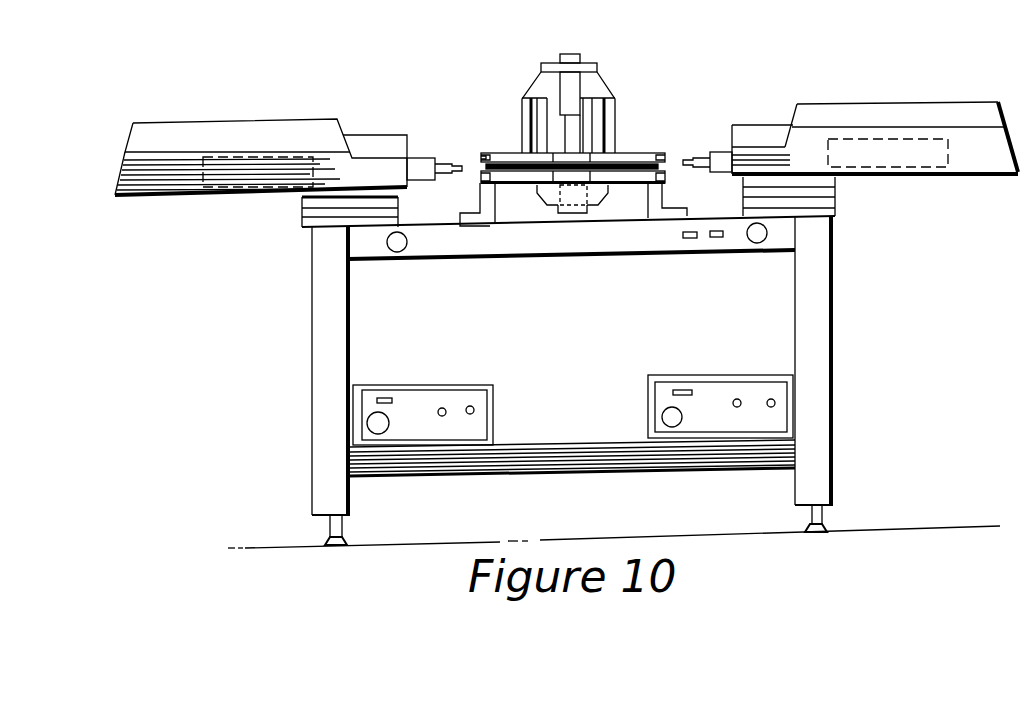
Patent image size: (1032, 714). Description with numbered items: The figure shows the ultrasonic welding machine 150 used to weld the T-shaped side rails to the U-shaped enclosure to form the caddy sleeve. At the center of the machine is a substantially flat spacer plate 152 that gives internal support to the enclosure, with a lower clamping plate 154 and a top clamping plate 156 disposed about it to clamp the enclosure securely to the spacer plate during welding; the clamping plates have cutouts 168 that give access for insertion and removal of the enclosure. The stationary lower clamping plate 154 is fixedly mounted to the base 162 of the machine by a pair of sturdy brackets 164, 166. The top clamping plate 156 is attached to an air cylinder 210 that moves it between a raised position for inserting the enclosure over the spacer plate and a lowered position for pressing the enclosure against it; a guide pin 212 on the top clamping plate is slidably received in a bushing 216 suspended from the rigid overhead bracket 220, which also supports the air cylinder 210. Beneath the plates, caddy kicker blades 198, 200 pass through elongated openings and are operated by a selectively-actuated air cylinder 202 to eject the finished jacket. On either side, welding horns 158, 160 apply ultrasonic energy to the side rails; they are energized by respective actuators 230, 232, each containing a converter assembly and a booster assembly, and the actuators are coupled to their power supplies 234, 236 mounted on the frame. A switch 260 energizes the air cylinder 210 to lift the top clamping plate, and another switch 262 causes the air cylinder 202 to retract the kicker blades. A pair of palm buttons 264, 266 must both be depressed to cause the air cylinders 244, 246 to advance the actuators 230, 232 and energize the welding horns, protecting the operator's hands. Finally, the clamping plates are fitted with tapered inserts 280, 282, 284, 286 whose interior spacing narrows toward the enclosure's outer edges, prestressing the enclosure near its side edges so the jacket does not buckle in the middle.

The ultrasonic welding machine 150 is at (960, 422).
The spacer plate 152 is at (637, 155).
The lower clamping plate 154 is at (515, 218).
The top clamping plate 156 is at (517, 153).
The welding horn 158 is at (452, 160).
The welding horn 160 is at (699, 153).
The base 162 is at (637, 243).
The bracket 164 is at (485, 226).
The bracket 166 is at (660, 218).
The cutouts 168 is at (583, 153).
The caddy kicker blade 198 is at (545, 203).
The caddy kicker blade 200 is at (603, 202).
The air cylinder 202 is at (575, 216).
The air cylinder 210 is at (591, 117).
The guide pin 212 is at (563, 123).
The bushing 216 is at (563, 83).
The overhead bracket 220 is at (594, 63).
The actuator 230 is at (263, 120).
The actuator 232 is at (887, 102).
The power supply 234 is at (412, 385).
The power supply 236 is at (708, 377).
The air cylinder 244 is at (279, 169).
The air cylinder 246 is at (912, 158).
The switch 260 is at (693, 238).
The switch 262 is at (723, 237).
The palm button 264 is at (397, 253).
The palm button 266 is at (757, 244).
The tapered insert 280 is at (468, 157).
The tapered insert 282 is at (478, 183).
The tapered insert 284 is at (666, 156).
The tapered insert 286 is at (665, 171).